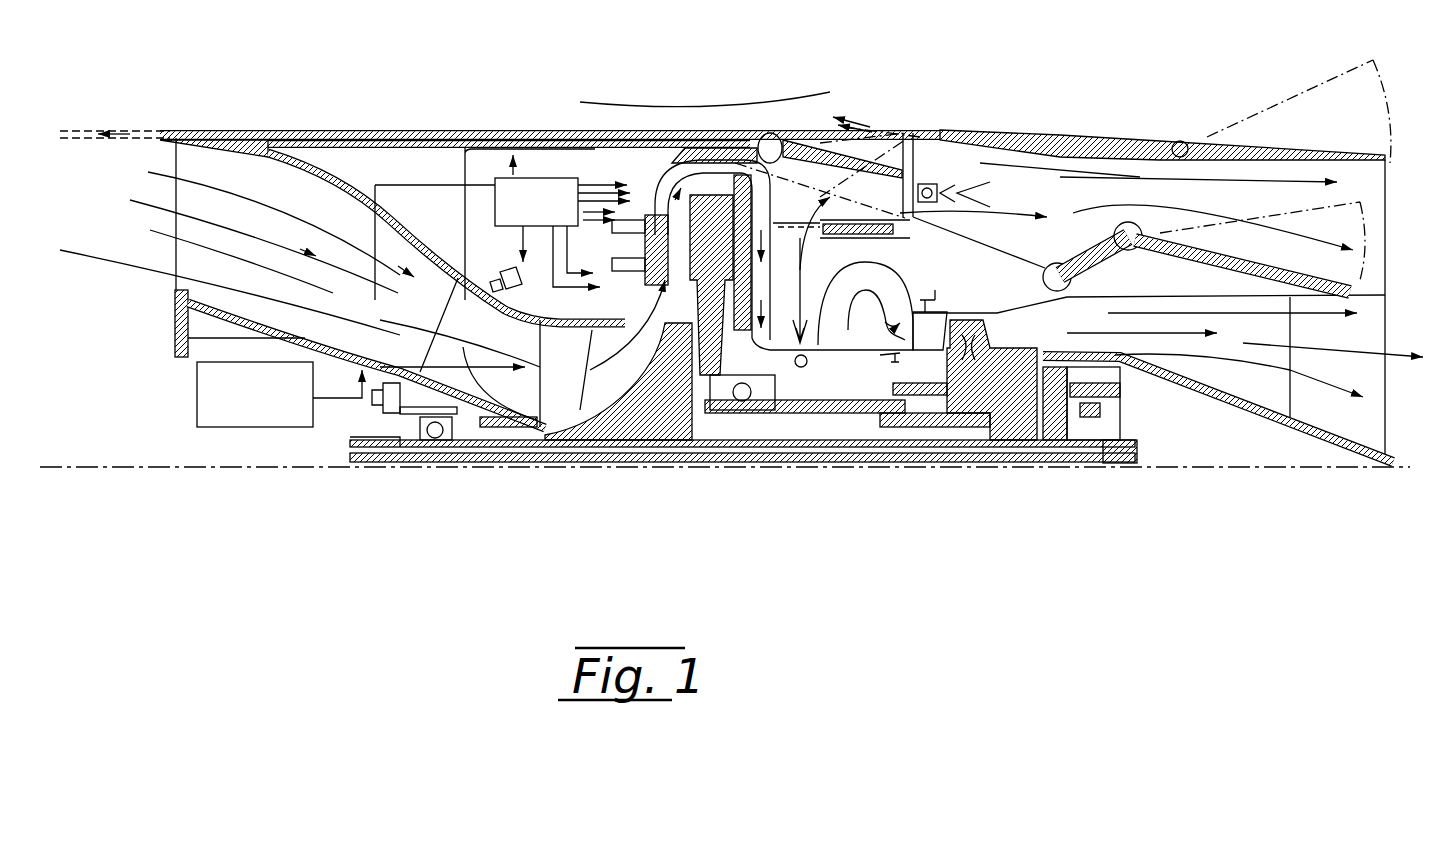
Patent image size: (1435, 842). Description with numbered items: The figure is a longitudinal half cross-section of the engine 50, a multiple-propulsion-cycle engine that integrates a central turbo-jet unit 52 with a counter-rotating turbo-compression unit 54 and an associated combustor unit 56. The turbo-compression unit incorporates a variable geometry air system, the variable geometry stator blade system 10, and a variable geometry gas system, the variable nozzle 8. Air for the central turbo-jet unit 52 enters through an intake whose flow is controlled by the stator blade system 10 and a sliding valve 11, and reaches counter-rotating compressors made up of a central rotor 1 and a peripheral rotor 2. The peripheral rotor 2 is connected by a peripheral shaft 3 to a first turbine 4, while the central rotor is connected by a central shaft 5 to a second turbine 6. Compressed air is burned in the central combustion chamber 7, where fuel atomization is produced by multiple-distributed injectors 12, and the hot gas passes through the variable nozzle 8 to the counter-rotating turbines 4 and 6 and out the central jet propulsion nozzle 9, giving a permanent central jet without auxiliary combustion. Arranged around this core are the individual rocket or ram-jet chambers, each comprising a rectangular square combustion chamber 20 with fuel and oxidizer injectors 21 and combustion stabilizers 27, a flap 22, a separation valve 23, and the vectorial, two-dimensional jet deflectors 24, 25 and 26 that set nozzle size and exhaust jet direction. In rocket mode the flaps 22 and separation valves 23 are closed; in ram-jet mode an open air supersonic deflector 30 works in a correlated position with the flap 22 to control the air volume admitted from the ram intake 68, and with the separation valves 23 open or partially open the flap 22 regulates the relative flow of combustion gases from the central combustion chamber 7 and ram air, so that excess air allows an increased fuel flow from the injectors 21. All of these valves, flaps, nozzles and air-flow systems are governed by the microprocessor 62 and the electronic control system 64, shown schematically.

The central rotor 1 is at (657, 420).
The peripheral rotor 2 is at (708, 400).
The peripheral shaft 3 is at (745, 400).
The first turbine 4 is at (965, 352).
The central shaft 5 is at (826, 465).
The second turbine 6 is at (1015, 420).
The central combustion chamber 7 is at (838, 332).
The variable nozzle 8 is at (925, 420).
The central jet propulsion nozzle 9 is at (1240, 353).
The variable geometry stator blade system 10 is at (465, 350).
The sliding valve 11 is at (173, 137).
The multiple-distributed injectors 12 is at (800, 370).
The rectangular square combustion chambers 20 is at (1061, 190).
The fuel and oxidizer injectors 21 is at (930, 184).
The flaps 22 is at (800, 137).
The separation valves 23 is at (863, 228).
The jet deflector 24 is at (1082, 257).
The jet deflector 25 is at (1160, 240).
The jet deflector 26 is at (1210, 150).
The combustion stabilizers 27 is at (970, 190).
The open air supersonic deflector 30 is at (927, 133).
The engine 50 is at (438, 120).
The central turbo-jet unit 52 is at (1040, 418).
The counter-rotating turbo-compression unit 54 is at (598, 395).
The combustor unit 56 is at (1002, 188).
The microprocessor 62 is at (197, 391).
The electronic control system 64 is at (545, 183).
The ram intake 68 is at (830, 143).